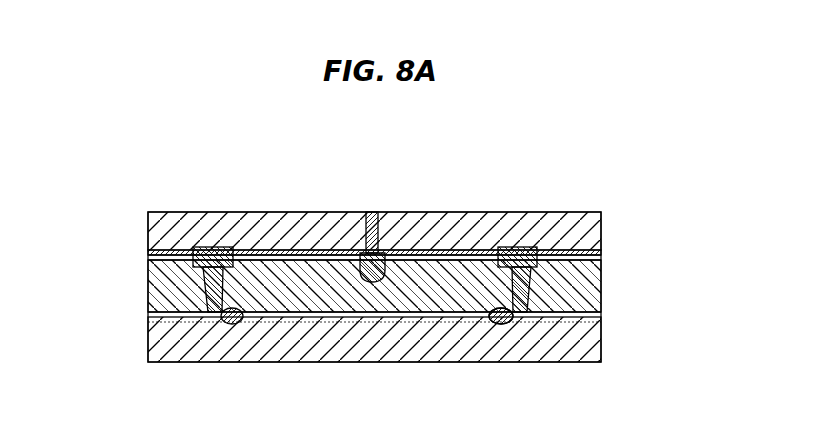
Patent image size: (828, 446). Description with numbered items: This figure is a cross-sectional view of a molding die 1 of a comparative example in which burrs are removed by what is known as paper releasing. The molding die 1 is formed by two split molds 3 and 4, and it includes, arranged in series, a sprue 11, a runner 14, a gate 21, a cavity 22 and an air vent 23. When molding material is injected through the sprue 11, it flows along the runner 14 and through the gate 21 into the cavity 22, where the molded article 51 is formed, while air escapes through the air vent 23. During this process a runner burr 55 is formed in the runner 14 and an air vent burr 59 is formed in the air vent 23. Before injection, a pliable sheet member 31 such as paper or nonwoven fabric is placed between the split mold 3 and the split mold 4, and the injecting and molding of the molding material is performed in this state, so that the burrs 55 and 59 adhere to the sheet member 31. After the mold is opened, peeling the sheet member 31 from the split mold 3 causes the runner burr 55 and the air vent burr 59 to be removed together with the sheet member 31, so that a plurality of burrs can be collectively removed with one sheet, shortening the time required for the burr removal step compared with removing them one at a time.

The molding die 1 is at (142, 210).
The split mold 3 is at (148, 311).
The split mold 4 is at (155, 249).
The sprue 11 is at (375, 212).
The runner 14 is at (530, 276).
The gate 21 is at (515, 318).
The cavity 22 is at (503, 325).
The air vent 23 is at (202, 269).
The sheet member 31 is at (447, 250).
The molded article 51 is at (227, 323).
The runner burr 55 is at (530, 297).
The air vent burr 59 is at (208, 297).